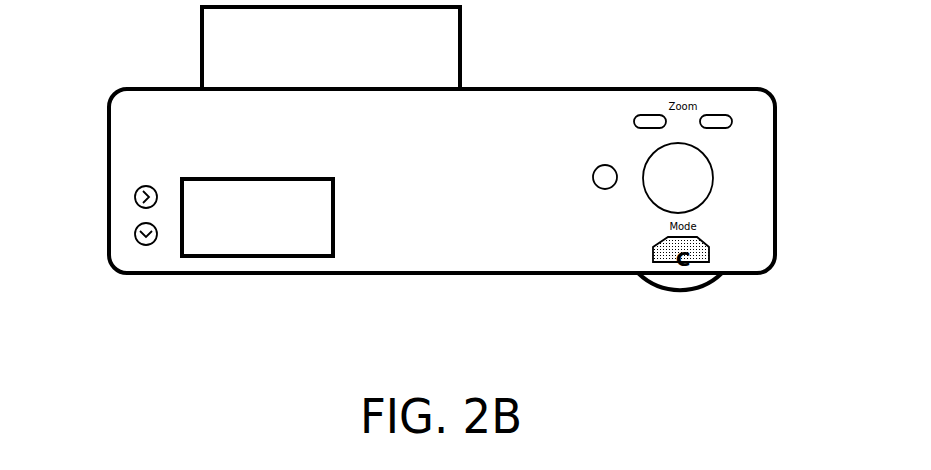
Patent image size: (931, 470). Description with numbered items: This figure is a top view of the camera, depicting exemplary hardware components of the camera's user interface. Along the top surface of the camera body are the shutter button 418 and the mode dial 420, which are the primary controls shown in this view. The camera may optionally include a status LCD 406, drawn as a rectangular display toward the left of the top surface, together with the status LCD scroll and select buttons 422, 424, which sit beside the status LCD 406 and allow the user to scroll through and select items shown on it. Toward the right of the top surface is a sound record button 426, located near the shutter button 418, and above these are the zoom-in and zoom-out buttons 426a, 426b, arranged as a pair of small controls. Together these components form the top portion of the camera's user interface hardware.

The status LCD 406 is at (295, 256).
The shutter button 418 is at (707, 198).
The mode dial 420 is at (690, 295).
The status LCD scroll button 422 is at (135, 198).
The status LCD select button 424 is at (135, 235).
The sound record button 426 is at (593, 178).
The zoom-in button 426a is at (643, 113).
The zoom-out button 426b is at (719, 113).